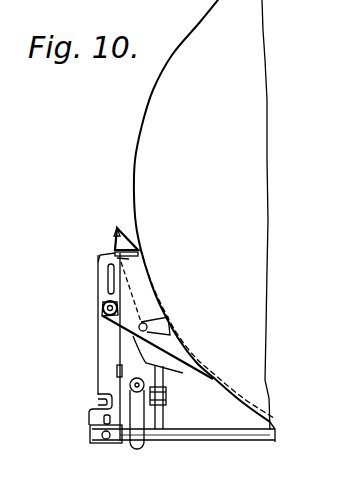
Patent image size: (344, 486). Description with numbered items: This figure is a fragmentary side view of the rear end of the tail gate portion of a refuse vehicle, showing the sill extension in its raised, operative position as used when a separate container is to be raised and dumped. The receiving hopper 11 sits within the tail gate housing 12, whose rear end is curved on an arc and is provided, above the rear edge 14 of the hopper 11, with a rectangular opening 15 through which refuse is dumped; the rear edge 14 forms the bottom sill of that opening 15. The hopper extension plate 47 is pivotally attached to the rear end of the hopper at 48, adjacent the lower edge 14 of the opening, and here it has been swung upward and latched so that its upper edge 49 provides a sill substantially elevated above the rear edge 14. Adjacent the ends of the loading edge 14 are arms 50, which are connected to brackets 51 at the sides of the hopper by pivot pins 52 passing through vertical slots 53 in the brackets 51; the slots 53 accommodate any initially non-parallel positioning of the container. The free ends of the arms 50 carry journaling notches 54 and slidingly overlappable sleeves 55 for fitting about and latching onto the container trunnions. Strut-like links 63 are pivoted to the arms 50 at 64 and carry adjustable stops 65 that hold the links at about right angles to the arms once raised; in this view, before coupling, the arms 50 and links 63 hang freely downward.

The receiving hopper 11 is at (258, 388).
The tail gate housing 12 is at (241, 88).
The rear edge of the hopper 14 is at (163, 320).
The rectangular opening 15 is at (143, 118).
The hopper extension plate 47 is at (113, 241).
The pivotal attachment of extension plate 48 is at (170, 359).
The upper edge of the plate 49 is at (117, 227).
The arms 50 is at (110, 347).
The brackets 51 is at (104, 267).
The pivot pins 52 is at (101, 309).
The vertical slots 53 is at (110, 283).
The journaling notches 54 is at (104, 400).
The slidingly overlappable sleeves 55 is at (92, 432).
The strut-like links 63 is at (135, 393).
The pivot of the links 64 is at (121, 382).
The adjustable stops 65 is at (162, 392).